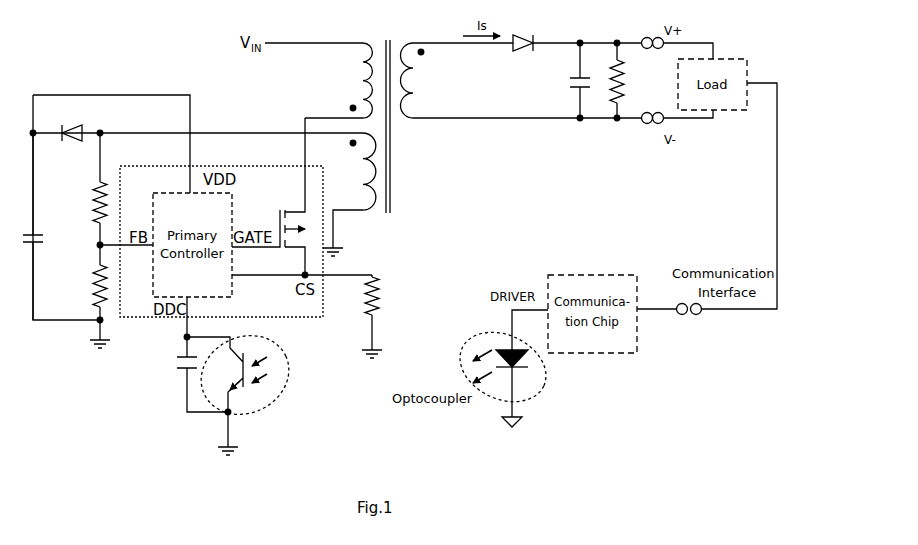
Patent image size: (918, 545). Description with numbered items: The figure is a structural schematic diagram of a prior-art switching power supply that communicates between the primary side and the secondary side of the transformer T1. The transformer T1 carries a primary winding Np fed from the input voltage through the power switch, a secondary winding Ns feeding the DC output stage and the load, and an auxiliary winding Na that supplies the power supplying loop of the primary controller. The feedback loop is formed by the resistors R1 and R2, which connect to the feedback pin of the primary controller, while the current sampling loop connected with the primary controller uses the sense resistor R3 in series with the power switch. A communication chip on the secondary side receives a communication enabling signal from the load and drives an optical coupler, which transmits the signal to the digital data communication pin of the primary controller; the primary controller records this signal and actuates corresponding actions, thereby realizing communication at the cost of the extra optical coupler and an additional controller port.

The feedback resistor R1 is at (89, 189).
The feedback resistor R2 is at (89, 292).
The current sense resistor R3 is at (362, 312).
The transformer T1 is at (377, 138).
The primary winding Np is at (355, 80).
The secondary winding Ns is at (425, 80).
The auxiliary winding Na is at (356, 171).